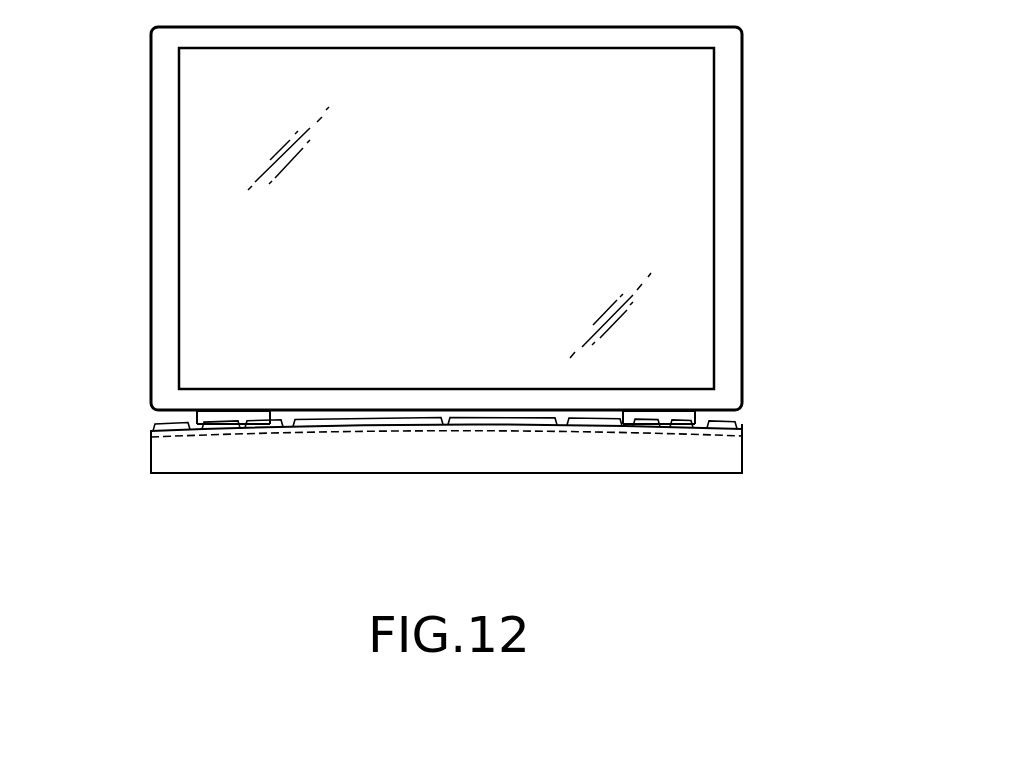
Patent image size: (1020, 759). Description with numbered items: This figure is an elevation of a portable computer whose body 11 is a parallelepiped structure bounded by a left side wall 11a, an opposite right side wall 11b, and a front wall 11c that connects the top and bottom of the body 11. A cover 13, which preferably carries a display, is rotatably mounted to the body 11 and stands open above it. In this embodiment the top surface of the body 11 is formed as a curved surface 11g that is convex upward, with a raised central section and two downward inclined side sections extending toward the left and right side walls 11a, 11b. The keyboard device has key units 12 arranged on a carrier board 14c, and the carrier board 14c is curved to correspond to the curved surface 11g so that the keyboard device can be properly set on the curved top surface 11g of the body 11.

The cover 13 is at (162, 140).
The key units 12 is at (170, 428).
The carrier board 14c is at (150, 430).
The body 11 is at (163, 448).
The left side wall 11a is at (150, 463).
The right side wall 11b is at (742, 458).
The front wall 11c is at (570, 460).
The curved surface 11g is at (742, 424).